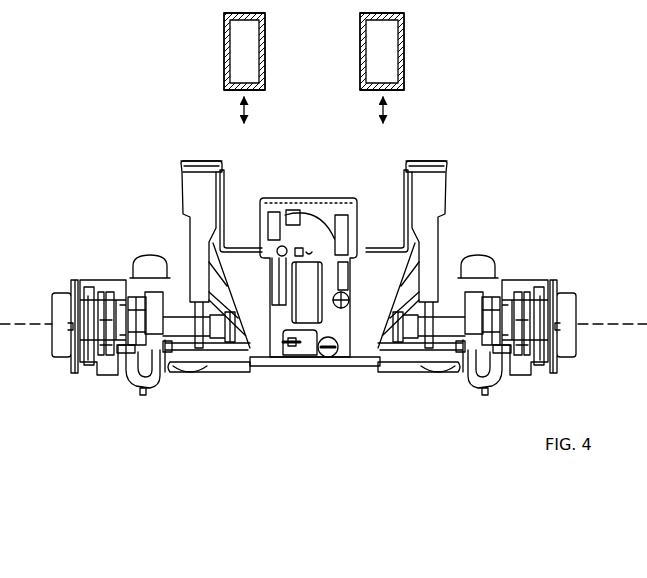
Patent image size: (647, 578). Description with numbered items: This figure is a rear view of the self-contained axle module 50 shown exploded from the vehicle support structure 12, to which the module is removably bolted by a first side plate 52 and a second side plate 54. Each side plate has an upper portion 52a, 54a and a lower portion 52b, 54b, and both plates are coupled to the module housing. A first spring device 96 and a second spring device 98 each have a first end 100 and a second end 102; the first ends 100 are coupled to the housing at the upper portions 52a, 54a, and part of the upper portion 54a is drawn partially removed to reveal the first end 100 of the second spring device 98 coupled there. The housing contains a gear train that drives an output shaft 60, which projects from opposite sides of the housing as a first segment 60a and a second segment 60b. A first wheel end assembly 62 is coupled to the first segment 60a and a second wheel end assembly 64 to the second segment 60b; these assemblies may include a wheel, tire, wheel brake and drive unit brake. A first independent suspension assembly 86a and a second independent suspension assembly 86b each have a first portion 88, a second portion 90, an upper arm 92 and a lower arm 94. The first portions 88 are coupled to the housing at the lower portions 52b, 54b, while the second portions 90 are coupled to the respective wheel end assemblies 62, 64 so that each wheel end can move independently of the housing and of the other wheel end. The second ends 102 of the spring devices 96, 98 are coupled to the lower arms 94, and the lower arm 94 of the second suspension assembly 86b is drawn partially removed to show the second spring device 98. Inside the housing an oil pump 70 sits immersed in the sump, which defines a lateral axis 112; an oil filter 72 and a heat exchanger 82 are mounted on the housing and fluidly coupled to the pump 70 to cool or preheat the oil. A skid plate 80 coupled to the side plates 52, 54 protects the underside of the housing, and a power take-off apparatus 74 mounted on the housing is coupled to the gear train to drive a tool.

The support structure 12 is at (265, 31).
The self-contained axle module 50 is at (120, 188).
The first side plate 52 is at (204, 170).
The upper portion of first side plate 52a is at (209, 182).
The lower portion of first side plate 52b is at (243, 270).
The second side plate 54 is at (434, 167).
The upper portion of second side plate 54a is at (411, 172).
The lower portion of second side plate 54b is at (372, 270).
The output shaft 60 is at (132, 272).
The first segment of output shaft 60a is at (181, 303).
The second segment of output shaft 60b is at (441, 328).
The first wheel end assembly 62 is at (98, 387).
The second wheel end assembly 64 is at (463, 398).
The oil pump 70 is at (327, 357).
The oil filter 72 is at (357, 362).
The power take-off apparatus 74 is at (347, 205).
The skid plate 80 is at (267, 372).
The heat exchanger 82 is at (302, 313).
The first independent suspension assembly 86a is at (133, 275).
The second independent suspension assembly 86b is at (495, 273).
The first portion of independent suspension assembly 88 is at (213, 382).
The second portion of independent suspension assembly 90 is at (130, 397).
The upper arm 92 is at (185, 322).
The lower arm 94 is at (238, 357).
The first spring device 96 is at (188, 225).
The second spring device 98 is at (440, 230).
The first end of spring device 100 is at (178, 188).
The second end of spring device 102 is at (186, 343).
The lateral axis 112 is at (595, 320).